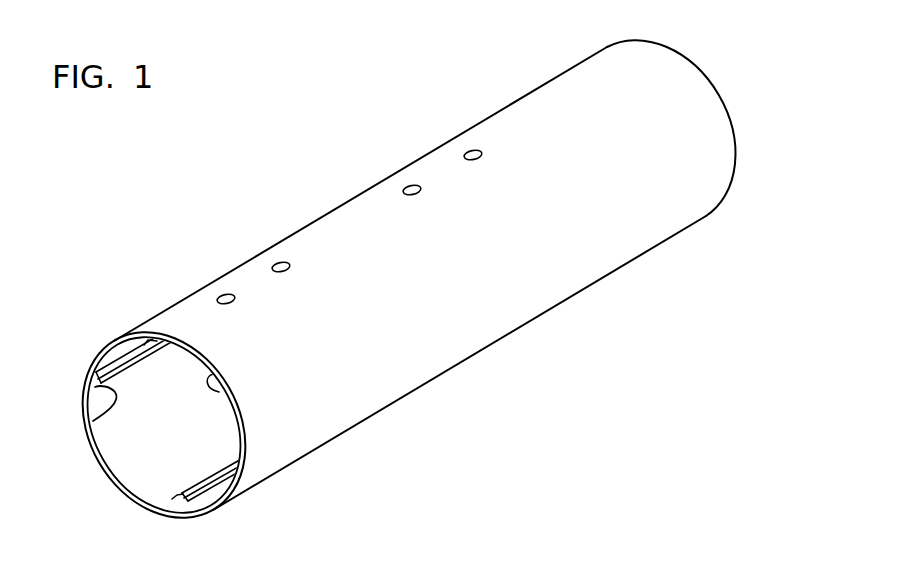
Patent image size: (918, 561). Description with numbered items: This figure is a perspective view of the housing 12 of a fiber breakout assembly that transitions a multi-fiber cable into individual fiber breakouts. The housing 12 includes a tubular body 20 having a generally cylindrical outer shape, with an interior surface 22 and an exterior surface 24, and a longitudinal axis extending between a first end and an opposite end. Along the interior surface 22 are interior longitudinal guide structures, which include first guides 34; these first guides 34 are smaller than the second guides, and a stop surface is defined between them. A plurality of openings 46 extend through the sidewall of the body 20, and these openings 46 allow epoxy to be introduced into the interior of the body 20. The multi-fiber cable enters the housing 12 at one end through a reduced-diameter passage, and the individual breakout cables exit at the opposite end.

The housing 12 is at (532, 267).
The tubular body 20 is at (526, 127).
The interior surface 22 is at (157, 445).
The exterior surface 24 is at (315, 412).
The first guides 34 is at (93, 421).
The openings 46 is at (235, 302).